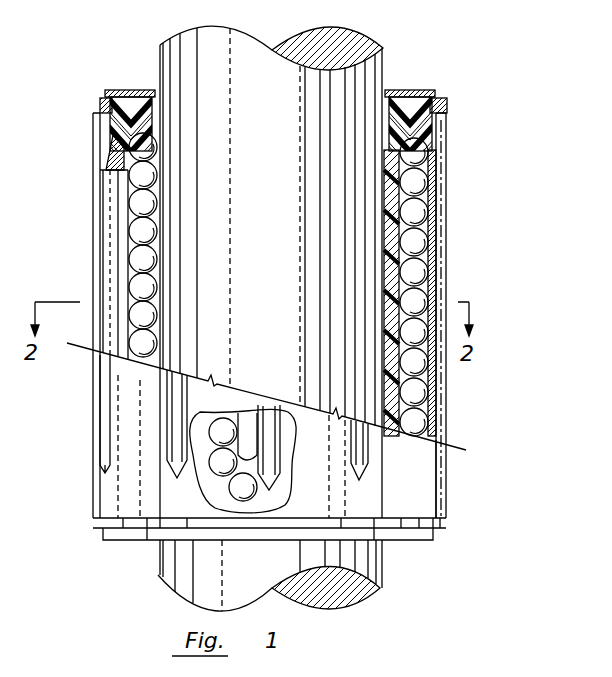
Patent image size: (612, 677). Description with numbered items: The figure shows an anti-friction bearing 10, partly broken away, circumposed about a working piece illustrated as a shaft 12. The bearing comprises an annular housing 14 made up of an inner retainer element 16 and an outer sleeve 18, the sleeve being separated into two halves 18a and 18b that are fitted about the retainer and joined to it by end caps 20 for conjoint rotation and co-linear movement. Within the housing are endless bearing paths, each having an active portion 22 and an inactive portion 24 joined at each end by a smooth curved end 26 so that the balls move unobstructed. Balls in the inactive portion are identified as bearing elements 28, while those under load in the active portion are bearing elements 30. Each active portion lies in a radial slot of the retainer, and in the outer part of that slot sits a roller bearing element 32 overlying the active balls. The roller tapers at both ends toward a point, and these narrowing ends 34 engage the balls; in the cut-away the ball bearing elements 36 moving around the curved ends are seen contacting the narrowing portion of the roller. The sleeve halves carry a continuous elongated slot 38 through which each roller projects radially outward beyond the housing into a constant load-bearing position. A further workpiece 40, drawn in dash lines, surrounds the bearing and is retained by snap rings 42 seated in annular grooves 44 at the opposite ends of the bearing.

The anti-friction bearing 10 is at (492, 159).
The shaft 12 is at (388, 62).
The housing 14 is at (78, 524).
The retainer element 16 is at (400, 90).
The sleeve 18 is at (104, 92).
The sleeve half 18a is at (438, 490).
The sleeve half 18b is at (425, 131).
The end cap 20 is at (140, 66).
The active portion 22 is at (157, 195).
The inactive portion 24 is at (428, 232).
The smooth curved end 26 is at (153, 158).
The bearing elements 28 is at (428, 292).
The bearing elements 30 is at (156, 286).
The roller bearing element 32 is at (115, 193).
The narrowing end 34 is at (113, 147).
The ball bearing elements 36 is at (280, 478).
The elongated slot 38 is at (165, 440).
The further workpiece 40 is at (447, 409).
The snap ring 42 is at (426, 102).
The annular groove 44 is at (405, 95).